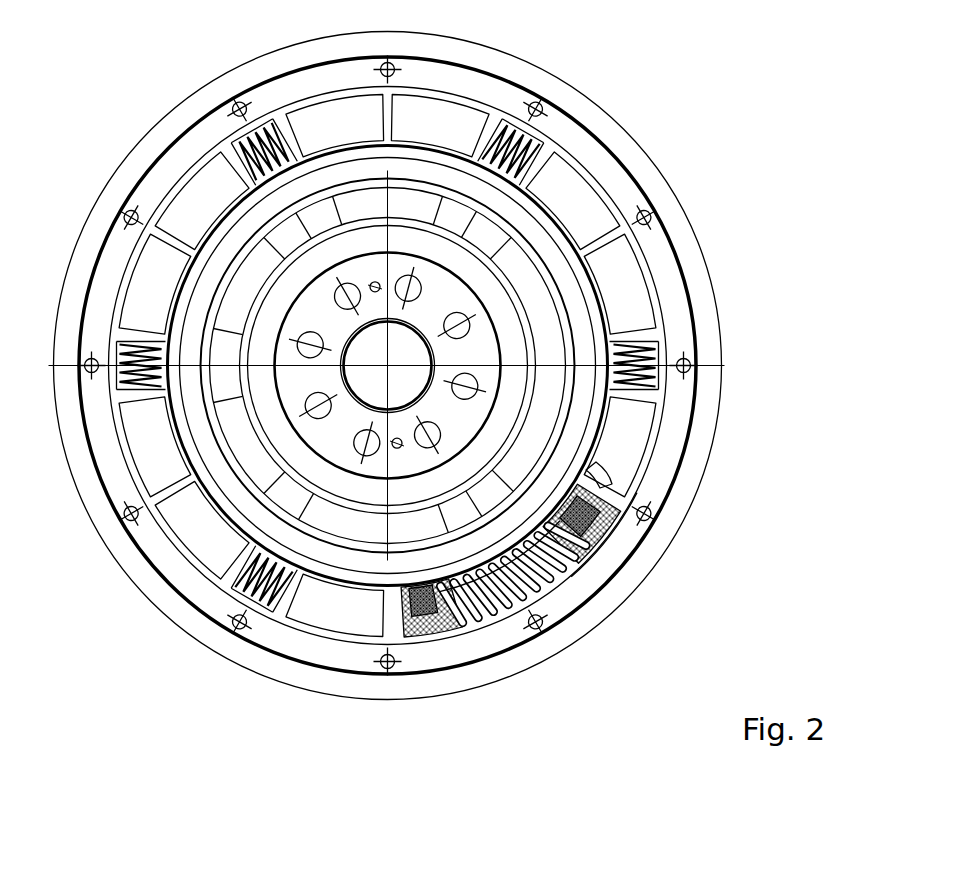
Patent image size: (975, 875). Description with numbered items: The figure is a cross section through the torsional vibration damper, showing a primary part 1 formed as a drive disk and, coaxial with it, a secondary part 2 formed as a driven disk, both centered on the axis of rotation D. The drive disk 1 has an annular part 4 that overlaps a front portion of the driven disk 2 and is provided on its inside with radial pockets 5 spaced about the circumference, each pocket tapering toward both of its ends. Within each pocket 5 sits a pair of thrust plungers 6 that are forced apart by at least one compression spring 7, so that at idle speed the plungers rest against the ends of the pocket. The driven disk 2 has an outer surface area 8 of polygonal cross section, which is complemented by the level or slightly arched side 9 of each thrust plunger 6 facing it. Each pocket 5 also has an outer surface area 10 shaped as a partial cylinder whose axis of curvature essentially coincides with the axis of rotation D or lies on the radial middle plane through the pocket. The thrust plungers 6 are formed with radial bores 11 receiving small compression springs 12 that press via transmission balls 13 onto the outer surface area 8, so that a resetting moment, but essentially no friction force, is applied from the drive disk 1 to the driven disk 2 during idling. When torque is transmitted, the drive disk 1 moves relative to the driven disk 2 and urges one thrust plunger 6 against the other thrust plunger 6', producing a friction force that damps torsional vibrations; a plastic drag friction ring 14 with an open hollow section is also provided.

The primary part 1 is at (292, 675).
The secondary part 2 is at (193, 477).
The annular part 4 is at (392, 625).
The radial pocket 5 is at (498, 610).
The thrust plunger 6 is at (433, 672).
The thrust plunger 6' is at (610, 574).
The compression spring 7 is at (523, 563).
The outer surface area 8 is at (583, 253).
The side 9 is at (587, 553).
The outer surface area 10 is at (700, 358).
The radial bore 11 is at (595, 500).
The small compression spring 12 is at (580, 493).
The transmission ball 13 is at (600, 443).
The drag friction ring 14 is at (385, 200).
The axis of rotation D is at (388, 366).